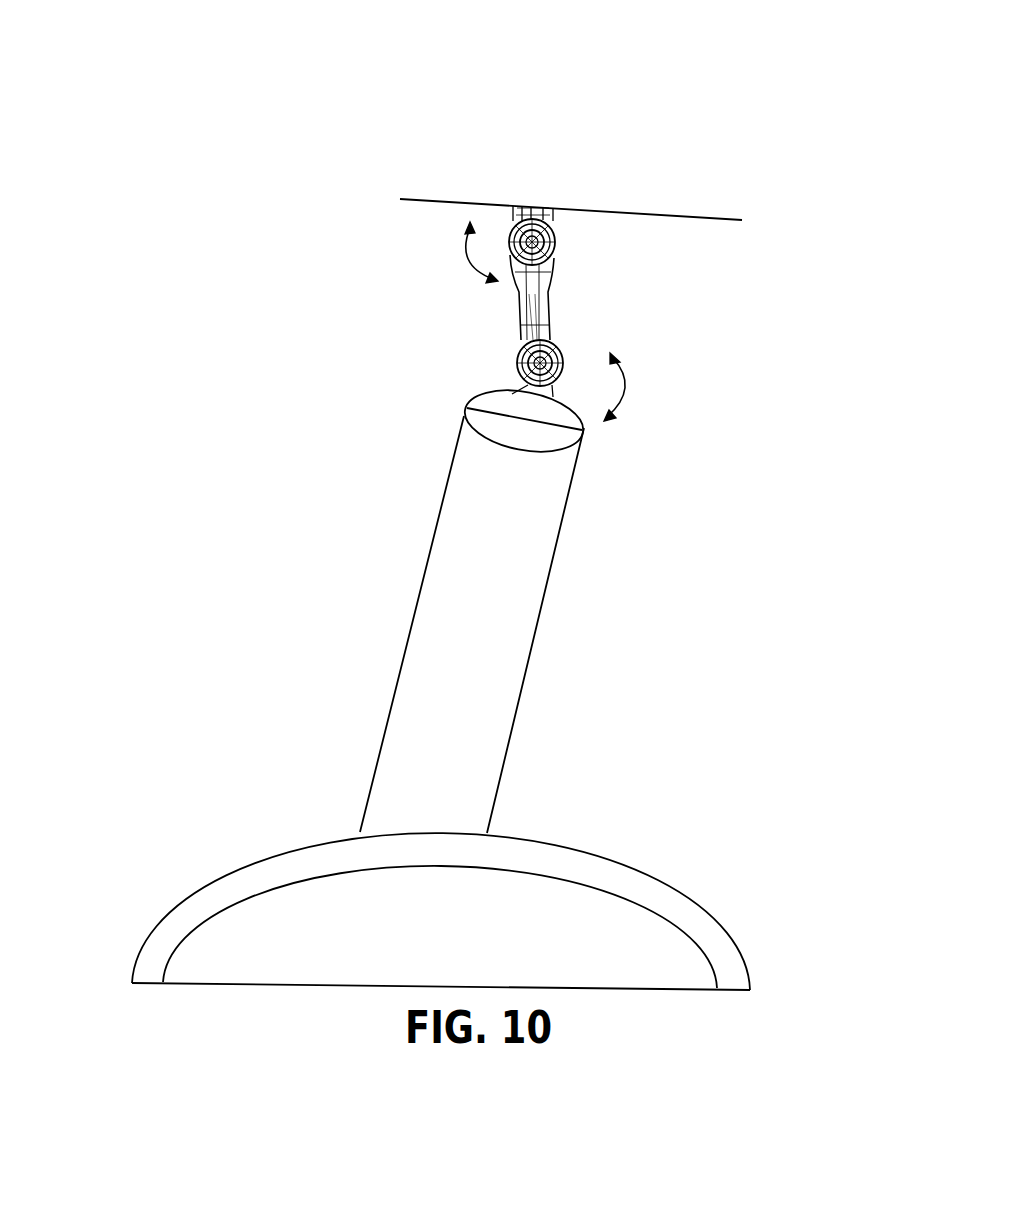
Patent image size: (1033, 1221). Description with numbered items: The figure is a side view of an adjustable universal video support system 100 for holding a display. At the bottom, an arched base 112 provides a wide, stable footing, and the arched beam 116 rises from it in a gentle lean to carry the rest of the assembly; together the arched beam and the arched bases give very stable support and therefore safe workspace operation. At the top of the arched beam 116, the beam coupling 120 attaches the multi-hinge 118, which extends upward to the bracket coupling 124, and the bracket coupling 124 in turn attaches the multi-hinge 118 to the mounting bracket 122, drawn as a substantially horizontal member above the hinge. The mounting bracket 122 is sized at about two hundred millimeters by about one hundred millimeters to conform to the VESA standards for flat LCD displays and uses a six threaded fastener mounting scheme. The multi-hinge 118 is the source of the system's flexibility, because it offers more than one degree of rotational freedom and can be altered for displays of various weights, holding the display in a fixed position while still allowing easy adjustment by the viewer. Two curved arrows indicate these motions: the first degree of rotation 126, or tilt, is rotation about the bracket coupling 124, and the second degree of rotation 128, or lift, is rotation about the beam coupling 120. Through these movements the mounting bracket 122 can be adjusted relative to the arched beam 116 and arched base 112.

The display stand assembly 100 is at (716, 85).
The arched base 112 is at (180, 895).
The arched beam 116 is at (518, 568).
The multi-hinge 118 is at (552, 303).
The beam coupling 120 is at (517, 358).
The mounting bracket 122 is at (590, 210).
The bracket coupling 124 is at (555, 218).
The first degree of rotation 126 is at (470, 260).
The second degree of rotation 128 is at (625, 402).